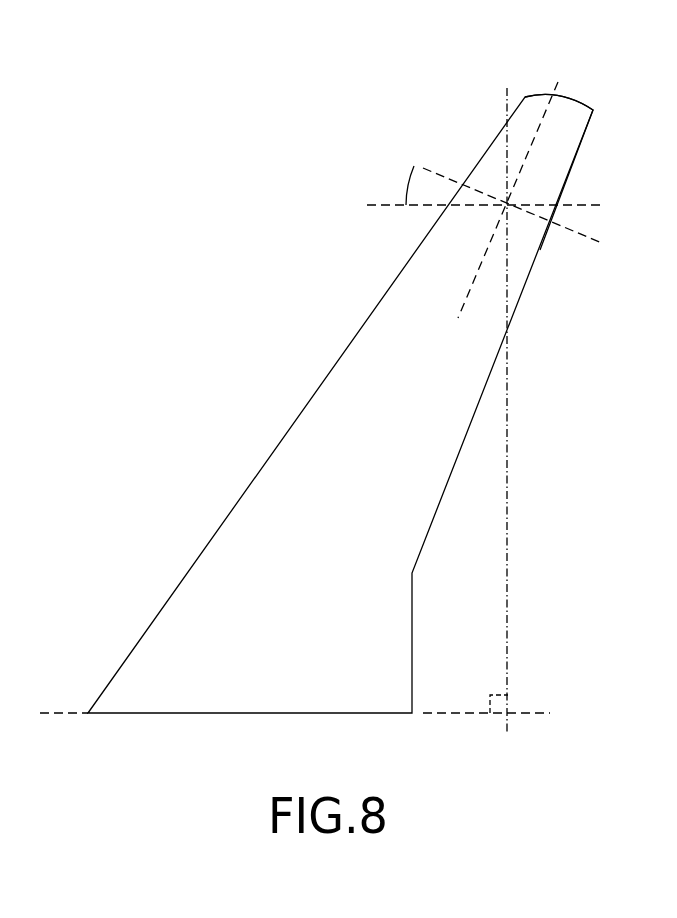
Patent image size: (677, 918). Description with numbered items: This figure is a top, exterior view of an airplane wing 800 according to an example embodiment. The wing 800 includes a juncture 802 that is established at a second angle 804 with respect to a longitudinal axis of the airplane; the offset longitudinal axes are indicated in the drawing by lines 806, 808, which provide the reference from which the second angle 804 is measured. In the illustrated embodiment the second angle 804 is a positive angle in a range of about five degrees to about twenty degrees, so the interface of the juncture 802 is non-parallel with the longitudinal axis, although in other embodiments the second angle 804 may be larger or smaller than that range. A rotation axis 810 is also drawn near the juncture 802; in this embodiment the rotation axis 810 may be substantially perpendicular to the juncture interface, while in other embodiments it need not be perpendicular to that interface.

The airplane wing 800 is at (327, 402).
The juncture 802 is at (532, 218).
The second angle 804 is at (400, 190).
The line indicating offset longitudinal axis 806 is at (430, 713).
The line indicating offset longitudinal axis 808 is at (588, 205).
The rotation axis 810 is at (545, 115).